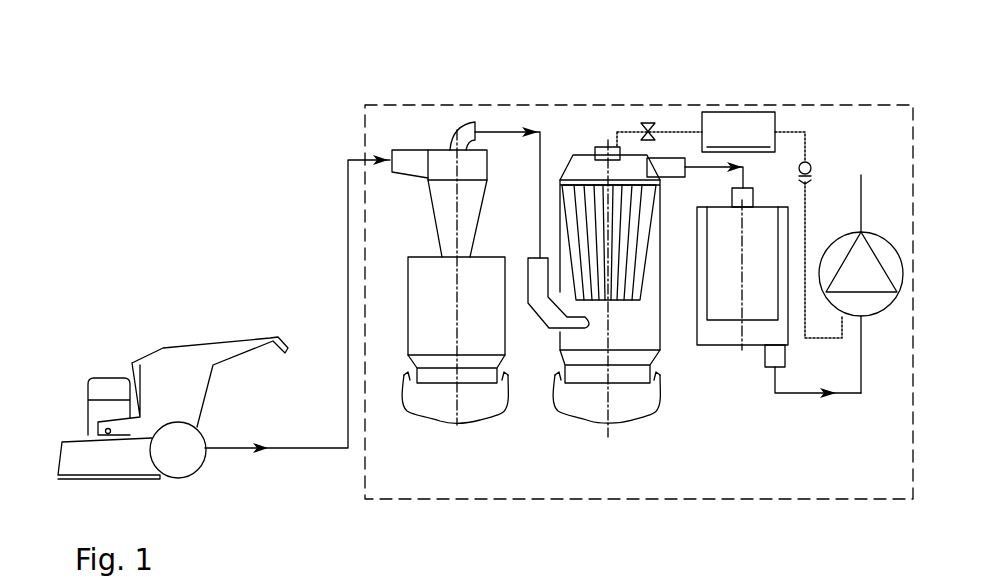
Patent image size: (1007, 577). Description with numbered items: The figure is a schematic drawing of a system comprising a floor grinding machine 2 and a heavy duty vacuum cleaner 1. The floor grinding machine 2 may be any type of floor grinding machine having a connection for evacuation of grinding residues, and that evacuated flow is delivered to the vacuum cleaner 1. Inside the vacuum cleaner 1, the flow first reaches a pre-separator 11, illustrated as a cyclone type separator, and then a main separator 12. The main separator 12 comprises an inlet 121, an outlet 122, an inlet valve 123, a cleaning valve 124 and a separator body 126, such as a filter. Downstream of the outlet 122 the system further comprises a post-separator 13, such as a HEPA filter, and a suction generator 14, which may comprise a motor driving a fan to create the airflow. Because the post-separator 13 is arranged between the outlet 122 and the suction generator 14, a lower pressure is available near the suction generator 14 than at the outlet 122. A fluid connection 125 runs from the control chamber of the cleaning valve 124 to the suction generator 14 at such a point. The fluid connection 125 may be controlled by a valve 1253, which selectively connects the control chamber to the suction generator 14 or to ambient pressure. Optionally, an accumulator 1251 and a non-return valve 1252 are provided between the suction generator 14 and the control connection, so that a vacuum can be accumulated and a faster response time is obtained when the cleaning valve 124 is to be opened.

The heavy duty vacuum cleaner 1 is at (365, 140).
The floor grinding machine 2 is at (162, 357).
The pre-separator 11 is at (443, 332).
The main separator 12 is at (714, 290).
The inlet 121 is at (573, 323).
The outlet 122 is at (667, 172).
The inlet valve 123 is at (547, 315).
The cleaning valve 124 is at (596, 147).
The fluid connection 125 is at (746, 175).
The accumulator 1251 is at (785, 128).
The non-return valve 1252 is at (807, 158).
The valve 1253 is at (647, 122).
The separator body 126 is at (635, 193).
The post-separator 13 is at (725, 337).
The suction generator 14 is at (833, 248).